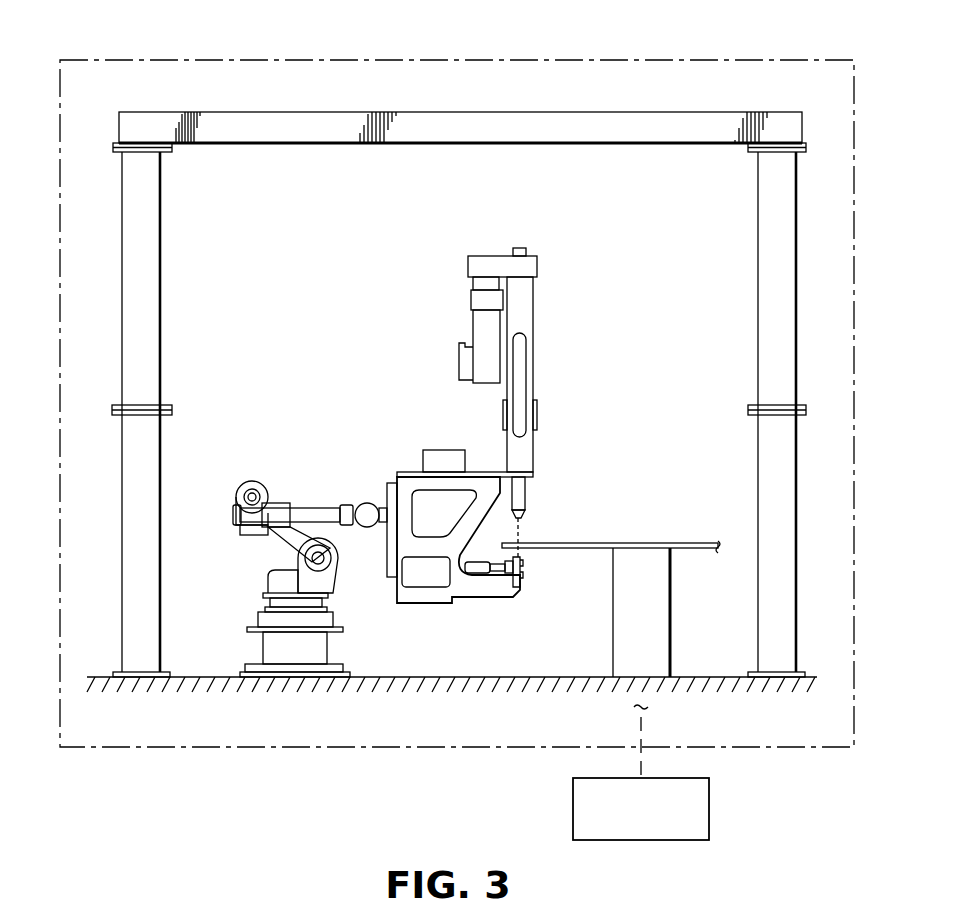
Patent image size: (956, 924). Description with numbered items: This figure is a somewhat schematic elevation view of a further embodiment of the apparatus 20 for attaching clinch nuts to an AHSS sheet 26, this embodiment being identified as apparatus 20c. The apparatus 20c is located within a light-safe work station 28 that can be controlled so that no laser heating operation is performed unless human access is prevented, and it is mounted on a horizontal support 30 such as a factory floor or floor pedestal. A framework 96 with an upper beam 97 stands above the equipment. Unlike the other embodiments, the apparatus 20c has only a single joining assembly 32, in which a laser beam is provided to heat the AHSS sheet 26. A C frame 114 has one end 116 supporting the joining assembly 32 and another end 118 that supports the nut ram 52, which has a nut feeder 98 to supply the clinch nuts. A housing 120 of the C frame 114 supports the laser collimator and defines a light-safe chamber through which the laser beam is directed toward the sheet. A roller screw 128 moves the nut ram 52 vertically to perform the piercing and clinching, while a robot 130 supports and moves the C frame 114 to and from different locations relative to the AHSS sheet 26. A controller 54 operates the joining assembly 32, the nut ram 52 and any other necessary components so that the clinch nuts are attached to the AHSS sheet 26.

The apparatus 20 is at (340, 312).
The apparatus 20c is at (599, 456).
The AHSS sheet 26 is at (605, 545).
The light-safe work station 28 is at (384, 55).
The horizontal support 30 is at (215, 676).
The joining assembly 32 is at (547, 573).
The nut ram 52 is at (527, 488).
The controller 54 is at (573, 810).
The framework 96 is at (459, 350).
The upper beam 97 is at (470, 127).
The nut feeder 98 is at (445, 450).
The C frame 114 is at (382, 477).
The one end 116 is at (527, 605).
The another end 118 is at (490, 484).
The housing 120 is at (391, 539).
The roller screw 128 is at (560, 344).
The robot 130 is at (284, 480).